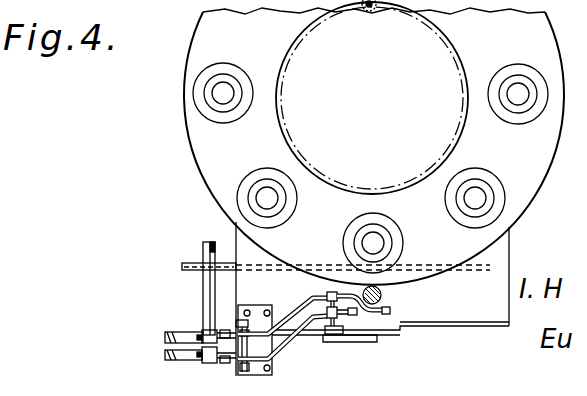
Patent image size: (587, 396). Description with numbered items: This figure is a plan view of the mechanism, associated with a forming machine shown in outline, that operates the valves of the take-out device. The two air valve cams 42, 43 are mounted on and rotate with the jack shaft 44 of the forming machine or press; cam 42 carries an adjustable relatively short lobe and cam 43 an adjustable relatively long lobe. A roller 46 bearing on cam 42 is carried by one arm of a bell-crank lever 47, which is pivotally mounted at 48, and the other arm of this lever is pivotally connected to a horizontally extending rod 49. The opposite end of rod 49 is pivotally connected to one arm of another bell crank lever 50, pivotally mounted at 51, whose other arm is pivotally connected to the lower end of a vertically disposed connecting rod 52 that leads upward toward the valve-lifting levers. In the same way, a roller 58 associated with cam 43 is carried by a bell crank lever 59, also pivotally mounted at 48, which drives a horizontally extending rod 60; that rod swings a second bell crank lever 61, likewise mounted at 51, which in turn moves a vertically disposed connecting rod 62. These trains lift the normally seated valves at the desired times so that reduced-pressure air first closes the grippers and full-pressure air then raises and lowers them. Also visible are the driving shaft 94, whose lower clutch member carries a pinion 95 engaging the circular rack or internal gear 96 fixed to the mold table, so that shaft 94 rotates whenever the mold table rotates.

The driving shaft 94 is at (368, 8).
The pinion 95 is at (375, 12).
The circular rack or internal gear 96 is at (280, 77).
The jack shaft 44 is at (203, 255).
The roller 46 is at (198, 334).
The bell-crank lever 47 is at (225, 330).
The air valve cam 42 is at (167, 336).
The air valve cam 43 is at (165, 353).
The roller 58 is at (200, 356).
The bell crank lever 59 is at (223, 366).
The horizontally extending rod 49 is at (307, 303).
The horizontally extending rod 60 is at (296, 323).
The bell crank lever 50 is at (347, 290).
The connecting rod 52 is at (392, 312).
The connecting rod 62 is at (355, 315).
The bell crank lever 61 is at (342, 320).
The pivot 51 is at (320, 327).
The pivot 48 is at (273, 352).